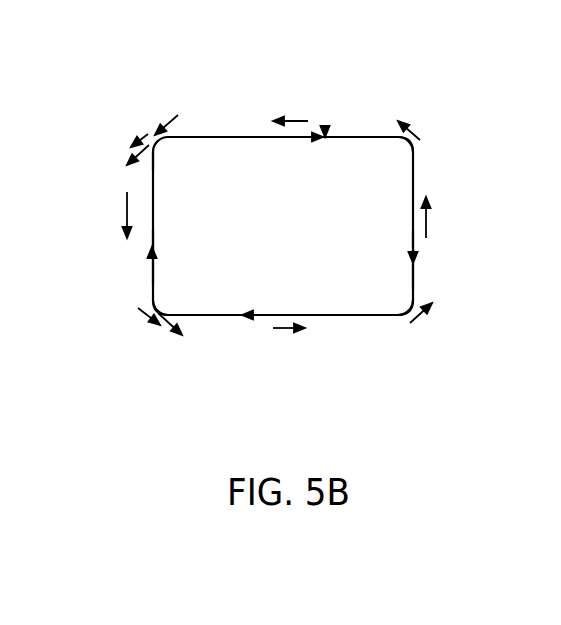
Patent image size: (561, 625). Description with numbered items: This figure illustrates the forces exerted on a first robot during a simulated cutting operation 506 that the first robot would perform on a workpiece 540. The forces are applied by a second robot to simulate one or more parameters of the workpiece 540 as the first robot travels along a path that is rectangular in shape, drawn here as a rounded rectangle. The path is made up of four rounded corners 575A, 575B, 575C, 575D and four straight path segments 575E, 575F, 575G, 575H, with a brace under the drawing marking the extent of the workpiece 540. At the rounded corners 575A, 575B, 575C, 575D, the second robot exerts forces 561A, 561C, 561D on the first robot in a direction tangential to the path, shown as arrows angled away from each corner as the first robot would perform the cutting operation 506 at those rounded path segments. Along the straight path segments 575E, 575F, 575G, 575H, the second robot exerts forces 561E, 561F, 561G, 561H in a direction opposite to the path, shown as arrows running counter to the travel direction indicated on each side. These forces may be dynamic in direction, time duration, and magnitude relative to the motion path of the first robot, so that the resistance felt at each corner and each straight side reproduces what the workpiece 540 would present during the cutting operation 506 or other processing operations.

The cutting operation 506 is at (507, 88).
The workpiece 540 is at (410, 387).
The force 561A is at (408, 128).
The force 561C is at (147, 319).
The force 561D is at (418, 316).
The force 561E is at (428, 217).
The force 561F is at (285, 120).
The force 561G is at (127, 214).
The force 561H is at (292, 329).
The rounded corner 575A is at (413, 150).
The rounded corner 575B is at (155, 137).
The rounded corner 575C is at (155, 312).
The rounded corner 575D is at (408, 317).
The straight path segment 575E is at (417, 255).
The straight path segment 575F is at (325, 132).
The straight path segment 575G is at (150, 258).
The straight path segment 575H is at (240, 316).